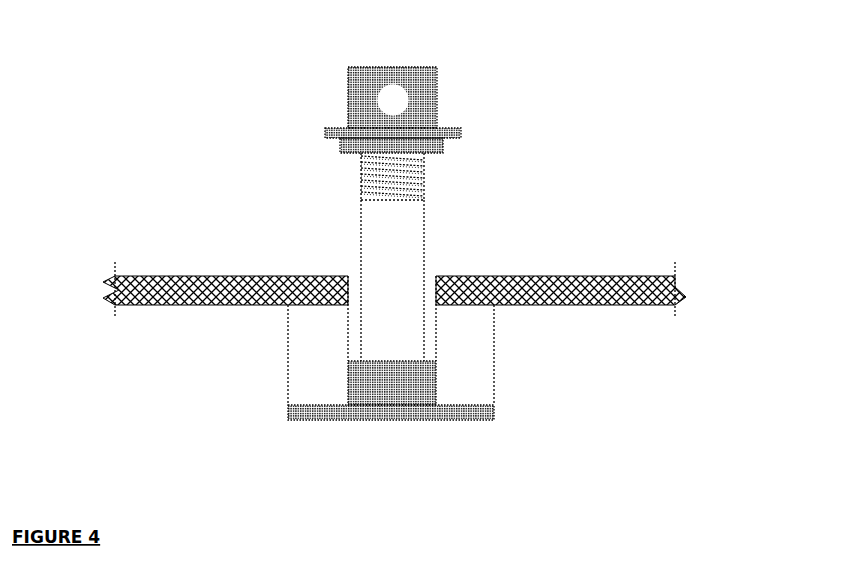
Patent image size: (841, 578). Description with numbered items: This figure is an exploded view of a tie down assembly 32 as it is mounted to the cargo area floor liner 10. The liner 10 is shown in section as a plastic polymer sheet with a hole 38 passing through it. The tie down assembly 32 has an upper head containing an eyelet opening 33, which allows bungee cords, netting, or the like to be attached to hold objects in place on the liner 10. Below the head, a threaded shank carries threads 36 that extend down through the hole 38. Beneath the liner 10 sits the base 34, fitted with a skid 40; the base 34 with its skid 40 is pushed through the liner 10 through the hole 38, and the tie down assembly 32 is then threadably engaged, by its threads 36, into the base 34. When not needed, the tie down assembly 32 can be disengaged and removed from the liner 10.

The cargo area floor liner 10 is at (505, 298).
The tie down assembly 32 is at (360, 113).
The eyelet opening 33 is at (385, 99).
The base 34 is at (390, 393).
The threads 36 is at (415, 195).
The hole 38 is at (380, 290).
The skid 40 is at (420, 416).